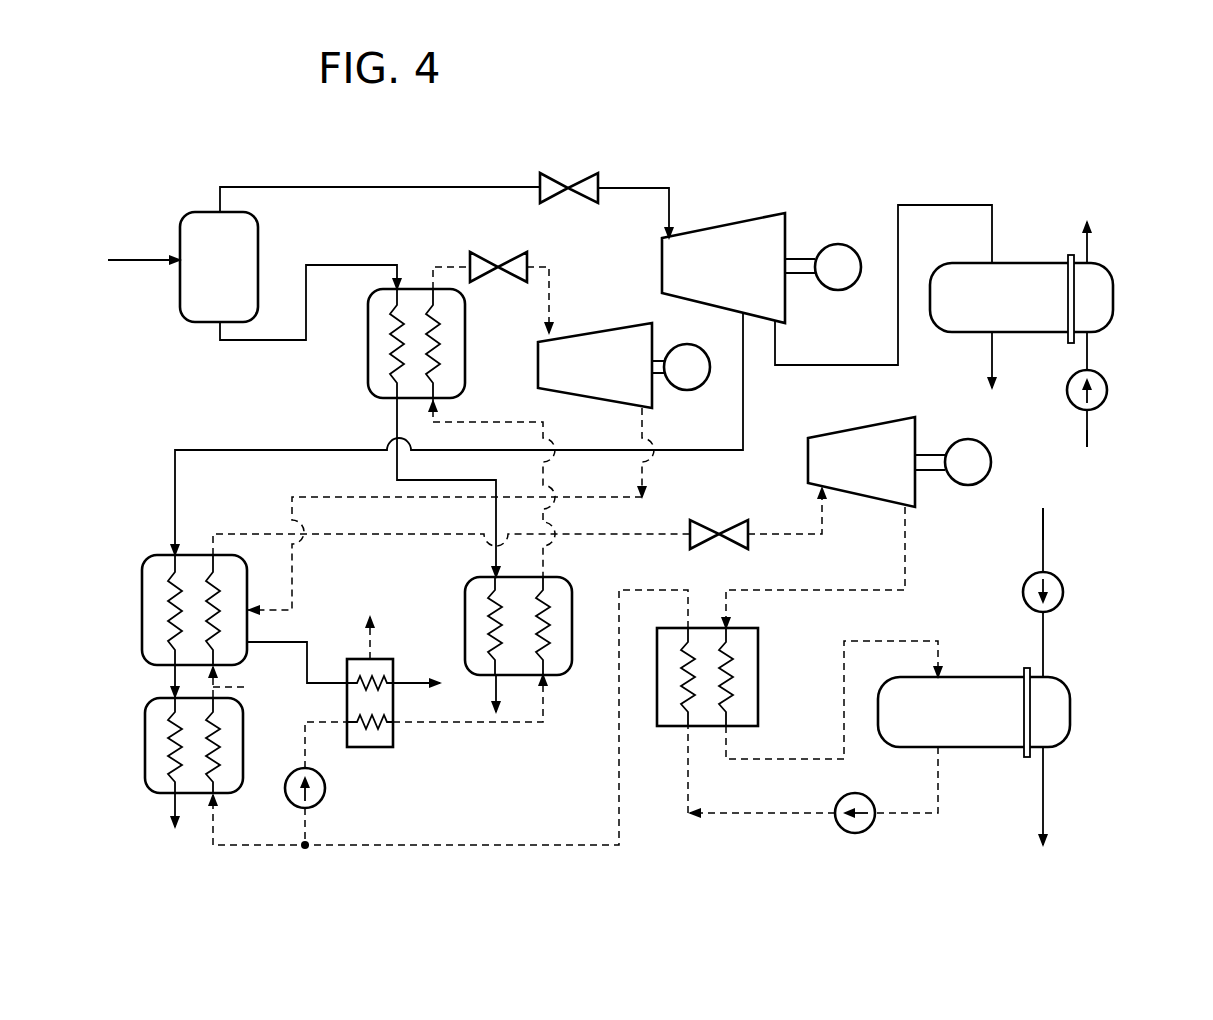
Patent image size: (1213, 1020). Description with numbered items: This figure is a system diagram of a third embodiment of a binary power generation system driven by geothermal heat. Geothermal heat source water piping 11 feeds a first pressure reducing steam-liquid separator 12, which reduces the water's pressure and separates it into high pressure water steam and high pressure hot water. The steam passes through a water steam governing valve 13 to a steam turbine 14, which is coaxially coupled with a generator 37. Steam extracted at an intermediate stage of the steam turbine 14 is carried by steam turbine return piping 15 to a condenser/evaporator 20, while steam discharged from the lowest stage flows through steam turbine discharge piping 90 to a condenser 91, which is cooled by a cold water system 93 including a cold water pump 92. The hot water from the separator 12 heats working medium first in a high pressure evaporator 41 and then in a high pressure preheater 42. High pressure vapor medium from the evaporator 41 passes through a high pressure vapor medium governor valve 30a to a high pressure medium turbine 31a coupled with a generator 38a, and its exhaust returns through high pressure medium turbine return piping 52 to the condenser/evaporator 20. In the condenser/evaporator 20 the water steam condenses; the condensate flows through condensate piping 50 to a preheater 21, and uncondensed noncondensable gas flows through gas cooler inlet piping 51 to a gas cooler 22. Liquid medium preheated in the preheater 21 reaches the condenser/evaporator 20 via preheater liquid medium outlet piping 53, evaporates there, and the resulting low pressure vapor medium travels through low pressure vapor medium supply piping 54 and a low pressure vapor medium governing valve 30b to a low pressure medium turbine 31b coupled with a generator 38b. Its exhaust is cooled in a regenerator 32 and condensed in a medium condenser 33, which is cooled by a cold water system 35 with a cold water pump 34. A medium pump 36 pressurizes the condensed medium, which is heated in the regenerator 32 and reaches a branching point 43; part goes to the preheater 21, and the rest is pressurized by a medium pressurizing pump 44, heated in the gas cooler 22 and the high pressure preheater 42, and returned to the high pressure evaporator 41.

The geothermal heat source water piping 11 is at (140, 257).
The first pressure reducing steam-liquid separator 12 is at (258, 246).
The water steam governing valve 13 is at (582, 177).
The steam turbine 14 is at (735, 222).
The steam turbine return piping 15 is at (745, 391).
The condenser/evaporator 20 is at (142, 601).
The preheater 21 is at (145, 746).
The gas cooler 22 is at (395, 738).
The high pressure vapor medium governor valve 30a is at (486, 254).
The low pressure vapor medium governing valve 30b is at (705, 522).
The high pressure medium turbine 31a is at (590, 327).
The low pressure medium turbine 31b is at (865, 428).
The regenerator 32 is at (760, 672).
The medium condenser 33 is at (976, 677).
The cold water pump 34 is at (1065, 593).
The cold water system 35 is at (1057, 555).
The medium pump 36 is at (853, 835).
The generator 37 is at (839, 244).
The generator 38a is at (697, 390).
The generator 38b is at (991, 457).
The high pressure evaporator 41 is at (368, 365).
The high pressure preheater 42 is at (465, 607).
The branching point 43 is at (305, 853).
The medium pressurizing pump 44 is at (327, 789).
The condensate piping 50 is at (173, 676).
The gas cooler inlet piping 51 is at (300, 642).
The high pressure medium turbine return piping 52 is at (338, 493).
The preheater liquid medium outlet piping 53 is at (244, 688).
The low pressure vapor medium supply piping 54 is at (265, 530).
The steam turbine discharge piping 90 is at (948, 205).
The condenser 91 is at (1022, 262).
The cold water pump 92 is at (1108, 390).
The cold water system 93 is at (1097, 441).